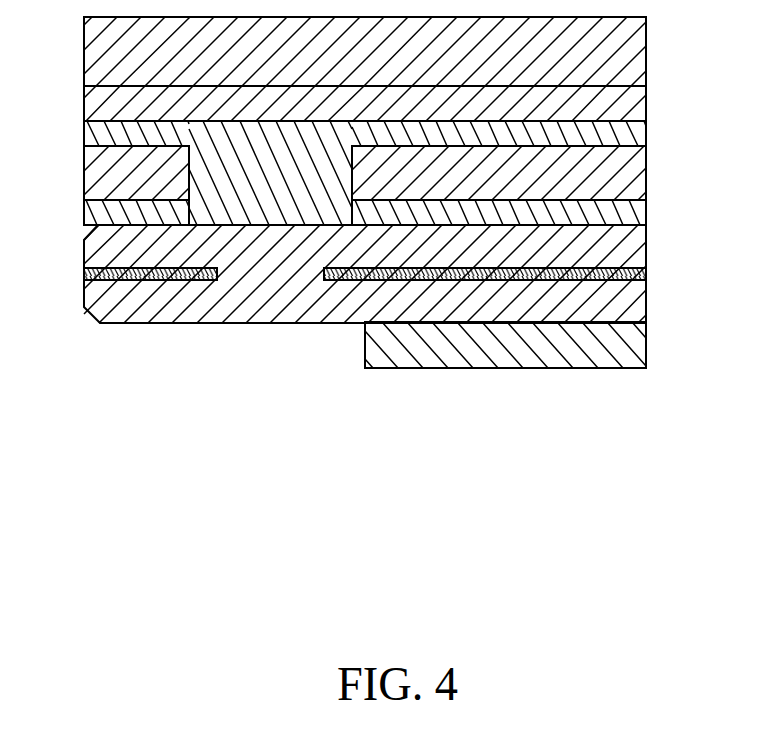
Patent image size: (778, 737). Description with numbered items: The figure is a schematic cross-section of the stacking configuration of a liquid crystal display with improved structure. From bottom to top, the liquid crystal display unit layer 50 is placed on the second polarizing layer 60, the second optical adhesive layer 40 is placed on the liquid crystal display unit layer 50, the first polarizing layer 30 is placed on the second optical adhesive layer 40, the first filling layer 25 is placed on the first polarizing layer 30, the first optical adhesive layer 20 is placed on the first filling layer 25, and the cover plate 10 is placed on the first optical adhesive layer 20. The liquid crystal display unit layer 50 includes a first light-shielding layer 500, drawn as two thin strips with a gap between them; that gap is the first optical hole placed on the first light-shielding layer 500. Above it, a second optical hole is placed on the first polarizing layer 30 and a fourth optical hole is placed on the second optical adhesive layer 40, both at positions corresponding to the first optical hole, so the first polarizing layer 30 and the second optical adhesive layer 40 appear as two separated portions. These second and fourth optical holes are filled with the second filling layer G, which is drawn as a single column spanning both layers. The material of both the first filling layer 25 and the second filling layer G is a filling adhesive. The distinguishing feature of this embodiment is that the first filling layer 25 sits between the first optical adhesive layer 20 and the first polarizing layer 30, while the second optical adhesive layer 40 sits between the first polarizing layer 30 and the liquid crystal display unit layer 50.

The cover plate 10 is at (646, 33).
The first optical adhesive layer 20 is at (646, 105).
The first filling layer 25 is at (646, 135).
The first polarizing layer 30 is at (646, 165).
The second optical adhesive layer 40 is at (646, 210).
The liquid crystal display unit layer 50 is at (638, 308).
The first light-shielding layer 500 is at (646, 270).
The second polarizing layer 60 is at (632, 348).
The second filling layer G is at (202, 180).